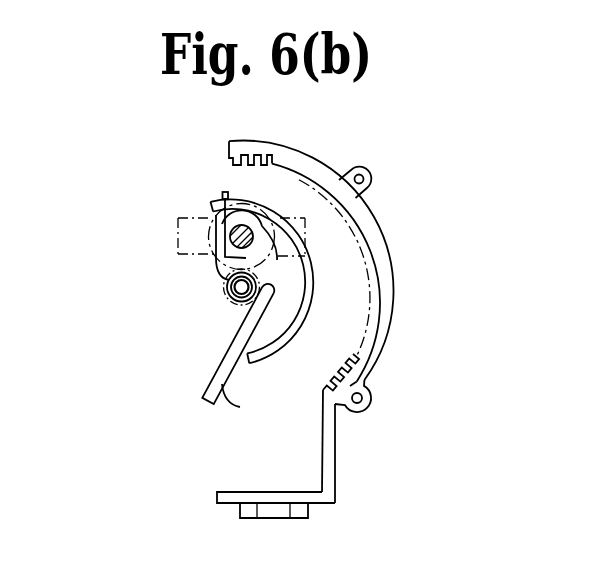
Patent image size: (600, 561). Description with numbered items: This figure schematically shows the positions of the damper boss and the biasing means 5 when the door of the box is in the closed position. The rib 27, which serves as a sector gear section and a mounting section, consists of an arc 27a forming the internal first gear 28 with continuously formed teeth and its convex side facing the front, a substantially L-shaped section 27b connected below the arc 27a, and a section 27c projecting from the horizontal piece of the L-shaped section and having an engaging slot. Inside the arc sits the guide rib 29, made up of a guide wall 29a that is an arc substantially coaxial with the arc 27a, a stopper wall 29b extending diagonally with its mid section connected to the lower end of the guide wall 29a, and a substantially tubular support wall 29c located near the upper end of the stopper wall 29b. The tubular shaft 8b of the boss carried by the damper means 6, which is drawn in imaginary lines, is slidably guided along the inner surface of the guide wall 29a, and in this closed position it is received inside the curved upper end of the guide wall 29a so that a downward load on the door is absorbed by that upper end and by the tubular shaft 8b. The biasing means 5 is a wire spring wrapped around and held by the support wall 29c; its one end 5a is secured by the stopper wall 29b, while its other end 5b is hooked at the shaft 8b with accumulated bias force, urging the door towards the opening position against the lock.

The rib 27 is at (316, 313).
The arc 27a is at (390, 254).
The L-shaped section 27b is at (326, 444).
The section having an engaging slot 27c is at (308, 512).
The first gear 28 is at (230, 166).
The guide rib 29 is at (305, 328).
The guide wall 29a is at (317, 305).
The stopper wall 29b is at (238, 410).
The support wall 29c is at (236, 289).
The biasing means 5 is at (188, 288).
The one end of the wire spring 5a is at (229, 298).
The other end of the wire spring 5b is at (223, 196).
The tubular shaft 8b is at (230, 236).
The damper means 6 is at (210, 243).